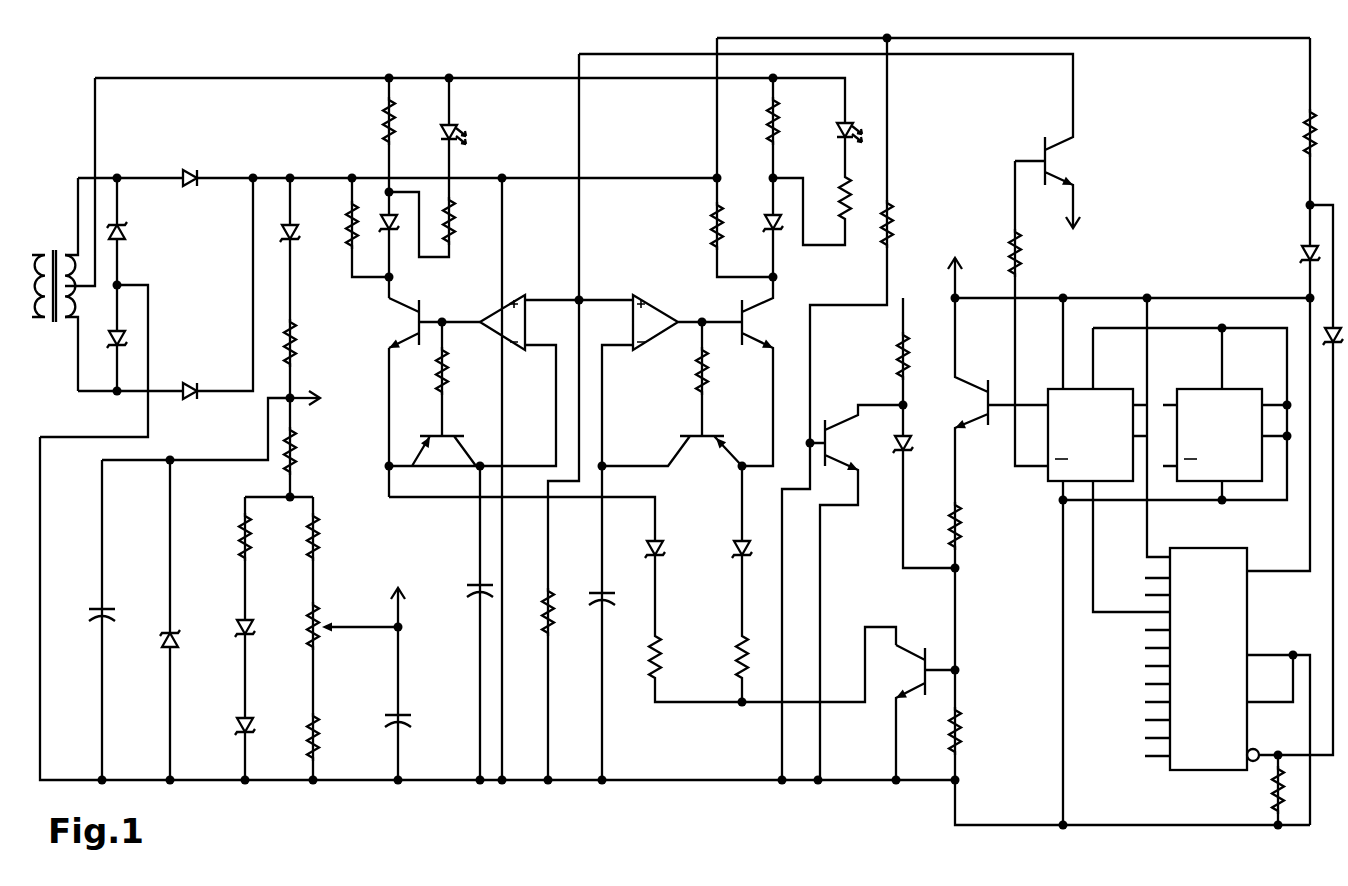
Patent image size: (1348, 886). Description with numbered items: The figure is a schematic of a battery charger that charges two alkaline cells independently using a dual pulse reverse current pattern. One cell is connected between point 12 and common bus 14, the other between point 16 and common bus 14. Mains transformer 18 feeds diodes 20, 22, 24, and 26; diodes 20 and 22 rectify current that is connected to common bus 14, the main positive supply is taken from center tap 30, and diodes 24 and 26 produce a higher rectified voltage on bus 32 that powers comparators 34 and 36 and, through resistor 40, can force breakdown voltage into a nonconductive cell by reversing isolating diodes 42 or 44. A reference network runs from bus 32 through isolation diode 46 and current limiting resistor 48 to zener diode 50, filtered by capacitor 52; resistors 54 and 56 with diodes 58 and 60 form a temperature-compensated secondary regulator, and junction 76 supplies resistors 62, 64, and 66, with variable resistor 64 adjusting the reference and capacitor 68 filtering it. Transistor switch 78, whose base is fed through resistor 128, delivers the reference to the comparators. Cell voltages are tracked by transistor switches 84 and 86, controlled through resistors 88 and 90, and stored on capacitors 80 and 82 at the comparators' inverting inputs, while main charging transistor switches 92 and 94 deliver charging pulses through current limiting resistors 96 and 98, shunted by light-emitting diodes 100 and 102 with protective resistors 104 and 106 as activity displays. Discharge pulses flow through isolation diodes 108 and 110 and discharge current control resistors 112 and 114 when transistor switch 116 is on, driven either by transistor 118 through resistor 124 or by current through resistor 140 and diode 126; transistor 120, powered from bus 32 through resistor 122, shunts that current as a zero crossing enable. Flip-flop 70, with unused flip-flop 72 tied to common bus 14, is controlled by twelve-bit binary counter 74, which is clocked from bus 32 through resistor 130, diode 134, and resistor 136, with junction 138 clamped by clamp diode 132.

The point 12 is at (462, 498).
The common bus 14 is at (425, 782).
The point 16 is at (755, 465).
The mains transformer 18 is at (56, 252).
The diode 20 is at (124, 236).
The diode 22 is at (126, 336).
The diode 24 is at (188, 170).
The diode 26 is at (218, 78).
The center tap 30 is at (147, 295).
The bus 32 is at (252, 177).
The comparator 34 is at (510, 338).
The comparator 36 is at (655, 295).
The resistor 40 is at (712, 226).
The isolating diode 42 is at (396, 230).
The isolating diode 44 is at (780, 228).
The isolation diode 46 is at (298, 236).
The current limiting resistor 48 is at (298, 352).
The zener diode 50 is at (166, 645).
The capacitor 52 is at (97, 605).
The resistor 54 is at (297, 460).
The resistor 56 is at (240, 552).
The diode 58 is at (235, 627).
The diode 60 is at (237, 727).
The resistor 62 is at (322, 535).
The variable resistor 64 is at (308, 638).
The resistor 66 is at (322, 745).
The capacitor 68 is at (406, 712).
The flip-flop 70 is at (1110, 396).
The flip-flop 72 is at (1240, 396).
The twelve-bit binary counter 74 is at (1227, 557).
The junction 76 is at (312, 497).
The transistor switch 78 is at (1050, 162).
The capacitor 80 is at (470, 600).
The capacitor 82 is at (605, 608).
The transistor switch 84 is at (447, 436).
The transistor switch 86 is at (685, 428).
The resistor 88 is at (449, 370).
The resistor 90 is at (694, 372).
The main battery pulse charging transistor switch 92 is at (416, 320).
The main battery pulse charging transistor switch 94 is at (750, 325).
The current limiting resistor 96 is at (383, 140).
The current limiting resistor 98 is at (765, 118).
The light-emitting diode 100 is at (458, 130).
The light-emitting diode 102 is at (838, 128).
The protective resistor 104 is at (457, 220).
The protective resistor 106 is at (850, 218).
The isolation diode 108 is at (663, 548).
The isolation diode 110 is at (738, 555).
The discharge current control resistor 112 is at (662, 648).
The discharge current control resistor 114 is at (735, 652).
The transistor switch 116 is at (920, 652).
The transistor 118 is at (985, 408).
The transistor 120 is at (842, 462).
The resistor 122 is at (896, 228).
The resistor 124 is at (963, 526).
The diode 126 is at (912, 443).
The resistor 128 is at (1020, 248).
The resistor 130 is at (1300, 128).
The clamp diode 132 is at (1300, 252).
The diode 134 is at (1325, 328).
The resistor 136 is at (1270, 800).
The junction 138 is at (1305, 206).
The resistor 140 is at (898, 368).